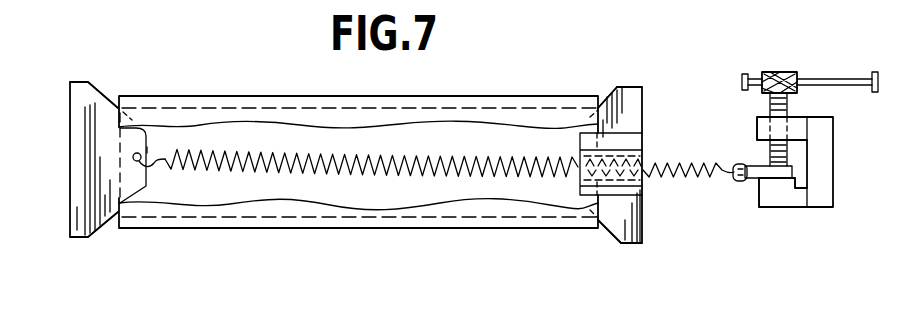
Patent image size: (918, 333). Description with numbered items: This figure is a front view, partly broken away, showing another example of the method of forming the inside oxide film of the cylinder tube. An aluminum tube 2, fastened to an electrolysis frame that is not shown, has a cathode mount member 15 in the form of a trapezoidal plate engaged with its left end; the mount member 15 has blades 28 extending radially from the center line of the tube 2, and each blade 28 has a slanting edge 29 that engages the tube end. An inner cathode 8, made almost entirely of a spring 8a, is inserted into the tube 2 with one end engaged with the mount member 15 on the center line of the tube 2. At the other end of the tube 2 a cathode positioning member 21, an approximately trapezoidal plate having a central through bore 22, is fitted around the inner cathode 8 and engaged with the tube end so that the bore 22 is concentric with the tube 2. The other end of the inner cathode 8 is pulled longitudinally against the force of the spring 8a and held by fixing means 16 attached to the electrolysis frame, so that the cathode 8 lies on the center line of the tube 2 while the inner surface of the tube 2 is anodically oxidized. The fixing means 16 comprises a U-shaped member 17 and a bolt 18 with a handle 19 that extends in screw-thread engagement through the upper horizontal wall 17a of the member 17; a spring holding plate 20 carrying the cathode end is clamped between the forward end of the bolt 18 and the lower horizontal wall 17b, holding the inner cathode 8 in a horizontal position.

The aluminum tube 2 is at (286, 118).
The inner cathode 8 is at (207, 151).
The spring 8a is at (178, 152).
The cathode mount member 15 is at (90, 80).
The fixing means 16 is at (786, 139).
The U-shaped member 17 is at (777, 166).
The upper horizontal wall 17a is at (758, 124).
The lower horizontal wall 17b is at (782, 203).
The bolt 18 is at (771, 71).
The handle 19 is at (820, 78).
The spring holding plate 20 is at (753, 182).
The cathode positioning member 21 is at (635, 86).
The central through bore 22 is at (632, 149).
The blade 28 is at (70, 82).
The slanting edge 29 is at (104, 94).